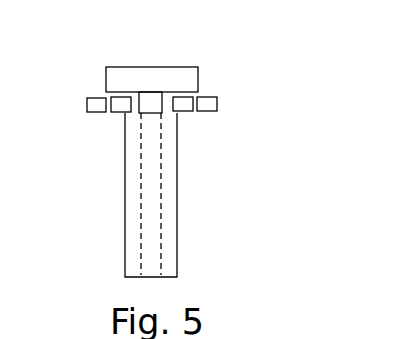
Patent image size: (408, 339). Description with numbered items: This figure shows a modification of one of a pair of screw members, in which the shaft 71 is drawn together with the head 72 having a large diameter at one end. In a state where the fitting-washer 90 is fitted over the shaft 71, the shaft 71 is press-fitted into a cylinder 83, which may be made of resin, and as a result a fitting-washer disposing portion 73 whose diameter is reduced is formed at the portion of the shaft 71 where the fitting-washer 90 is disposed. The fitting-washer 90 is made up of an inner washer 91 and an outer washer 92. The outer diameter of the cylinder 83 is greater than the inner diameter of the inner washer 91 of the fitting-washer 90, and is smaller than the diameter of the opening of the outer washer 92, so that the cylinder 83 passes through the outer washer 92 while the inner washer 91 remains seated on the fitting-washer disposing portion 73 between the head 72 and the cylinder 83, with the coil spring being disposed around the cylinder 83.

The shaft 71 is at (161, 205).
The head 72 is at (172, 67).
The fitting-washer disposing portion 73 is at (170, 103).
The cylinder 83 is at (171, 157).
The fitting-washer 90 is at (227, 103).
The inner washer 91 is at (119, 105).
The outer washer 92 is at (96, 103).